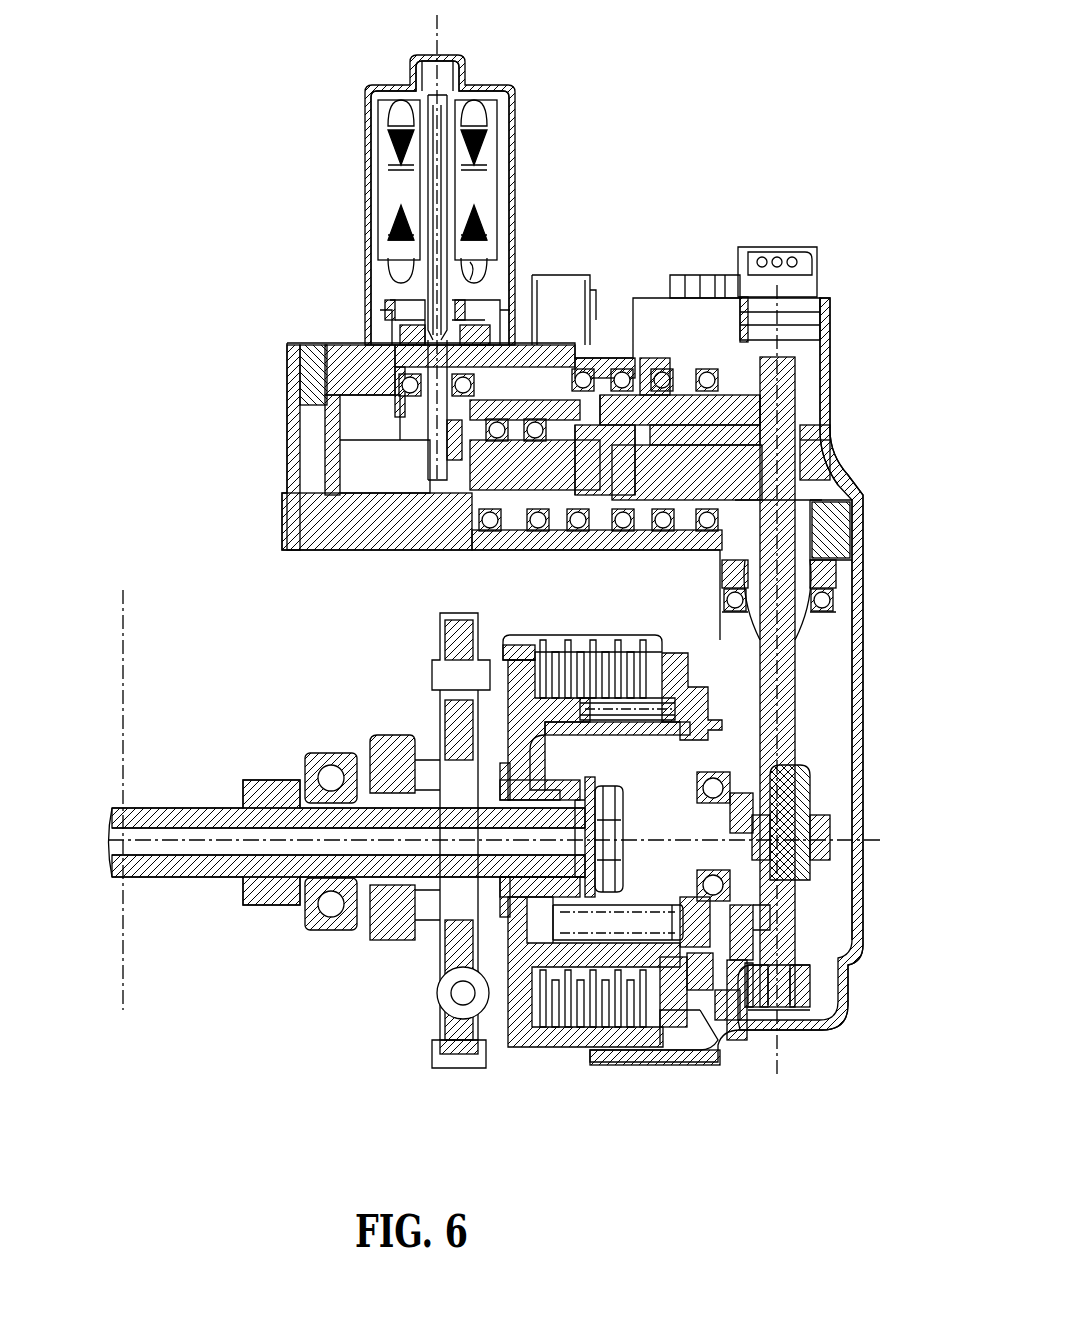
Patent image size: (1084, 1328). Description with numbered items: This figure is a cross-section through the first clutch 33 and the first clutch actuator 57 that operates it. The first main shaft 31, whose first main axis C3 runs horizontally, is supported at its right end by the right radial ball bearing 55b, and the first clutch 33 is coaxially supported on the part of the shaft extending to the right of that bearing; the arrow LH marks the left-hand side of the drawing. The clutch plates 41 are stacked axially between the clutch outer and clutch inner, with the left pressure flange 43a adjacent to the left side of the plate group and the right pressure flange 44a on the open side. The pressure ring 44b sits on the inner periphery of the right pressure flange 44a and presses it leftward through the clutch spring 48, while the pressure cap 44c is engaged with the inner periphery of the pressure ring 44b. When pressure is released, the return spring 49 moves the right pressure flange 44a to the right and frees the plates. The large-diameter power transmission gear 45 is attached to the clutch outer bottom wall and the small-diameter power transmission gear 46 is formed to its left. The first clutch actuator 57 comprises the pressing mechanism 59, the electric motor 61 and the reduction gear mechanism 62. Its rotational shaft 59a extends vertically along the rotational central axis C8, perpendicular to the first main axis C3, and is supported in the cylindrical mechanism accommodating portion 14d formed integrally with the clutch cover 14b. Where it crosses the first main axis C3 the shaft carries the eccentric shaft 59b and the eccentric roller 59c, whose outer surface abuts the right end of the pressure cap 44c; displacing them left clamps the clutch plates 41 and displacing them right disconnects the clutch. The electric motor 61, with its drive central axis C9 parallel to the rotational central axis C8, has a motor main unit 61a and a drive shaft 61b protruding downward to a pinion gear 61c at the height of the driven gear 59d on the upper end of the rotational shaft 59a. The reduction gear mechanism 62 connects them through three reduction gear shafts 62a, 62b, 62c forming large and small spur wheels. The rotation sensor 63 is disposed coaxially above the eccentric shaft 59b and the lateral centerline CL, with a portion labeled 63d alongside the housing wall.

The drive central axis C9 is at (445, 40).
The rotational central axis C8 is at (790, 308).
The lateral centerline CL is at (128, 656).
The first main axis C3 is at (155, 840).
The left-hand direction LH is at (62, 842).
The electric motor 61 is at (487, 200).
The motor main unit 61a is at (515, 103).
The drive shaft 61b is at (470, 280).
The pinion gear 61c is at (428, 460).
The first clutch actuator 57 is at (712, 185).
The rotation sensor 63 is at (818, 262).
The sensor housing portion 63d is at (852, 525).
The reduction gear mechanism 62 is at (685, 481).
The reduction gear shaft 62a is at (520, 530).
The reduction gear shaft 62b is at (605, 530).
The reduction gear shaft 62c is at (690, 530).
The pressing mechanism 59 is at (819, 682).
The rotational shaft 59a is at (800, 672).
The eccentric shaft 59b is at (818, 792).
The eccentric roller 59c is at (832, 842).
The driven gear 59d is at (832, 455).
The cylindrical mechanism accommodating portion 14d is at (856, 740).
The clutch cover 14b is at (632, 1066).
The first main shaft 31 is at (185, 812).
The right radial ball bearing 55b is at (322, 755).
The small-diameter power transmission gear 46 is at (390, 745).
The left pressure flange 43a is at (525, 1045).
The clutch plates 41 is at (578, 1027).
The return spring 49 is at (648, 722).
The clutch spring 48 is at (625, 895).
The large-diameter power transmission gear 45 is at (450, 1068).
The right pressure flange 44a is at (700, 1045).
The pressure ring 44b is at (800, 990).
The pressure cap 44c is at (752, 875).
The first clutch 33 is at (685, 1030).